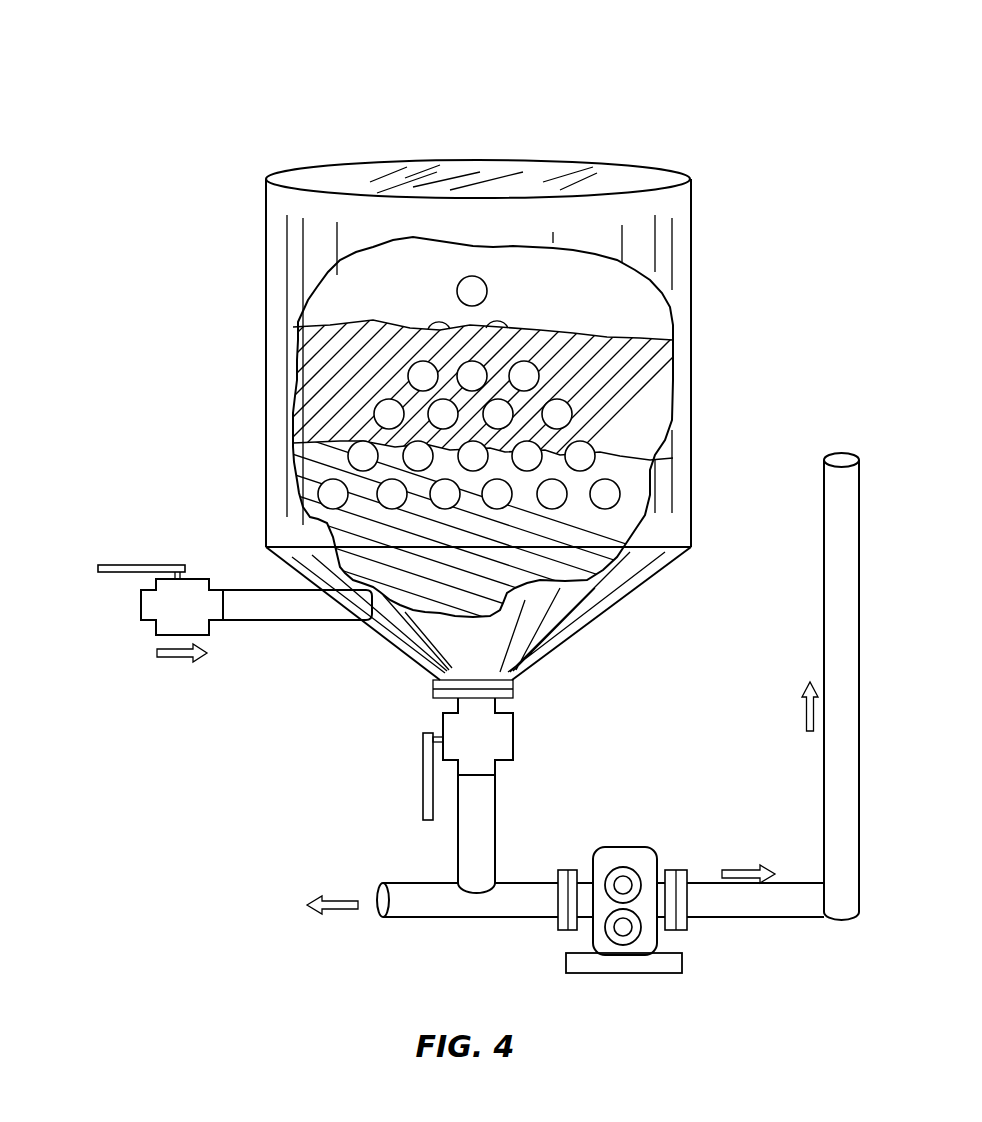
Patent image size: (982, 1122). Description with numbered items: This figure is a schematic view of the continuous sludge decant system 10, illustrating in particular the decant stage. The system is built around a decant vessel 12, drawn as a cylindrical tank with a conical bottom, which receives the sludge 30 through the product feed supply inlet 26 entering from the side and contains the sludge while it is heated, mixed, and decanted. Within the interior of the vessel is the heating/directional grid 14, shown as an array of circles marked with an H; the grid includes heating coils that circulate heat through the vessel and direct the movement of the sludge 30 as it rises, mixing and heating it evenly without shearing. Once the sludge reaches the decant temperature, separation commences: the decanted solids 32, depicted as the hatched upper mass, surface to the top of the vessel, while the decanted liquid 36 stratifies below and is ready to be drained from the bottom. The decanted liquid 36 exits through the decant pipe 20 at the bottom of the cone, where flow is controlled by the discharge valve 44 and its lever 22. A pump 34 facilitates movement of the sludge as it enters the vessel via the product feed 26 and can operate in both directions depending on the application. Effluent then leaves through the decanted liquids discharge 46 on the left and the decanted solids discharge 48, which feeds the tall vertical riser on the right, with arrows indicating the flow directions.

The continuous sludge decant system 10 is at (278, 70).
The decant vessel 12 is at (270, 212).
The heating/directional grid 14 is at (483, 275).
The decant pipe 20 is at (478, 850).
The lever 22 is at (421, 795).
The product feed supply inlet 26 is at (270, 612).
The sludge 30 is at (122, 610).
The decanted solids 32 is at (645, 395).
The pump 34 is at (622, 866).
The decanted liquid 36 is at (597, 555).
The discharge valve 44 is at (505, 751).
The decanted liquids discharge 46 is at (422, 890).
The decanted solids discharge 48 is at (807, 893).